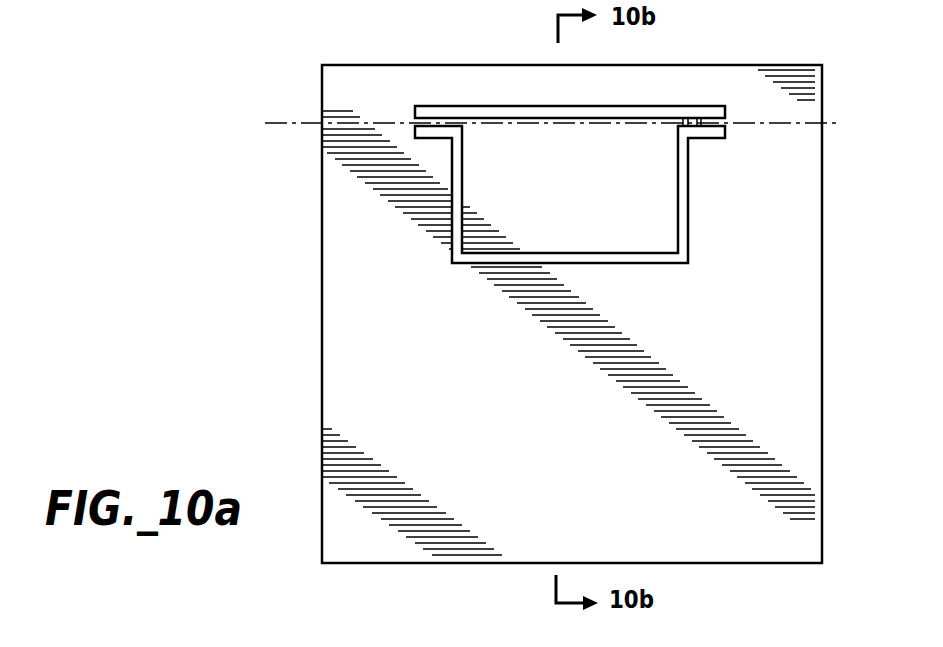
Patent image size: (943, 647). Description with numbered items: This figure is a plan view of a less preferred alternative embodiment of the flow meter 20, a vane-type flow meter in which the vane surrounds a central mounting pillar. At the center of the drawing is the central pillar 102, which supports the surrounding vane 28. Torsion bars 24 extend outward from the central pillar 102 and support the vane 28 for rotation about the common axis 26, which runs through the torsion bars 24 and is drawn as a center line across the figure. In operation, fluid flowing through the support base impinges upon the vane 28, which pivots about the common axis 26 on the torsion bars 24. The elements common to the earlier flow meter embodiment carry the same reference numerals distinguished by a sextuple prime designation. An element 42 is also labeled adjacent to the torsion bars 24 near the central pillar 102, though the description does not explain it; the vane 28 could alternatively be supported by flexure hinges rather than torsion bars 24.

The flow meter 20 is at (272, 175).
The torsion bars 24 is at (452, 127).
The common axis 26 is at (287, 119).
The vane 28 is at (332, 311).
The spacer 42 is at (698, 122).
The central pillar 102 is at (583, 187).